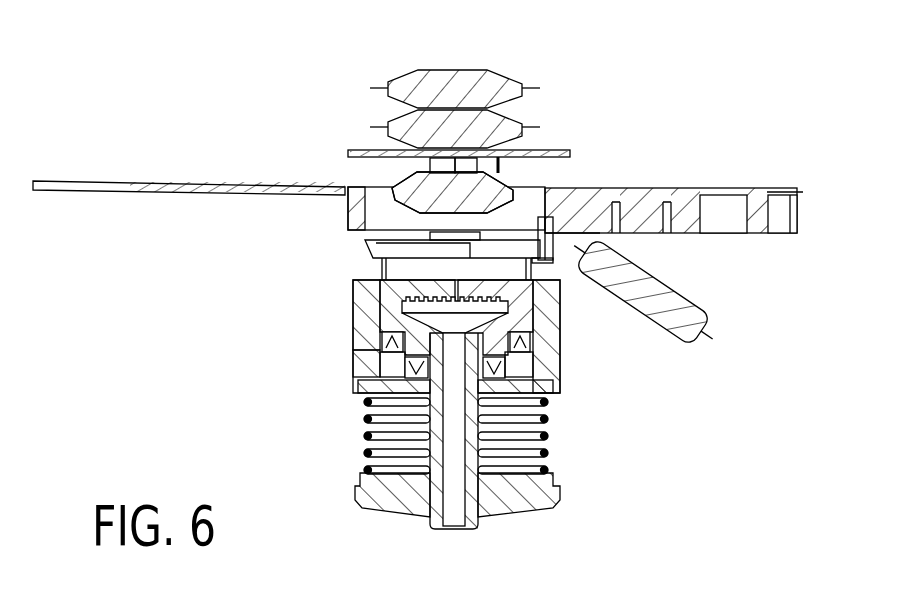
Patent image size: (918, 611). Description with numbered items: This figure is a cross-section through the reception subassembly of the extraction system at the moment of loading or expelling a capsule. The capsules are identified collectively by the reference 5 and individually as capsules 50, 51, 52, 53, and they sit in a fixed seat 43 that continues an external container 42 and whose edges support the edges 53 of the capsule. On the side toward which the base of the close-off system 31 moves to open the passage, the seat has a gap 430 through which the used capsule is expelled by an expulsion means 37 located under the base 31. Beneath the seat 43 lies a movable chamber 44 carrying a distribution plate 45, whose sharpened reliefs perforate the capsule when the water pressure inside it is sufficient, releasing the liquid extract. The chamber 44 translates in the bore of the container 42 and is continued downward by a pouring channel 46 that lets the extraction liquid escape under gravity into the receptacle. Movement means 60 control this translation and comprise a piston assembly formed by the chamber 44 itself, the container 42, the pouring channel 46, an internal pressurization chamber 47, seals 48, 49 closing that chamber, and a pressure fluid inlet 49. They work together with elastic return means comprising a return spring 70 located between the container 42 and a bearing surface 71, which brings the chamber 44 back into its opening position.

The capsule 5 is at (567, 66).
The base of the close-off system 31 is at (760, 228).
The expulsion means 37 is at (560, 240).
The external container 42 is at (550, 358).
The fixed seat 43 is at (366, 250).
The movable chamber 44 is at (387, 318).
The distribution plate 45 is at (410, 280).
The pouring channel 46 is at (484, 520).
The internal pressurization chamber 47 is at (378, 371).
The seal 48 is at (395, 406).
The seal and pressure fluid inlet 49 is at (390, 368).
The capsule 50 is at (702, 324).
The capsule 51 is at (522, 182).
The capsule 52 is at (522, 117).
The capsule edges 53 is at (418, 68).
The movement means 60 is at (529, 464).
The return spring 70 is at (550, 466).
The bearing surface 71 is at (378, 508).
The gap 430 is at (563, 262).